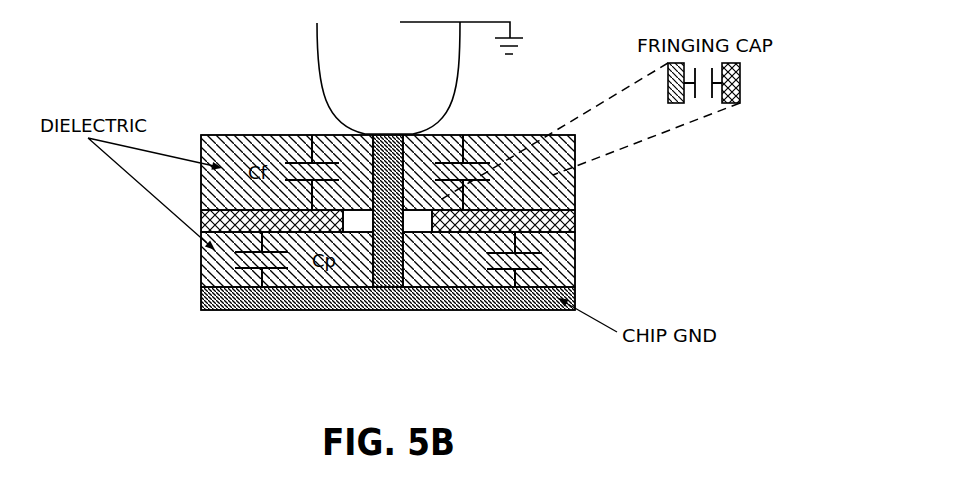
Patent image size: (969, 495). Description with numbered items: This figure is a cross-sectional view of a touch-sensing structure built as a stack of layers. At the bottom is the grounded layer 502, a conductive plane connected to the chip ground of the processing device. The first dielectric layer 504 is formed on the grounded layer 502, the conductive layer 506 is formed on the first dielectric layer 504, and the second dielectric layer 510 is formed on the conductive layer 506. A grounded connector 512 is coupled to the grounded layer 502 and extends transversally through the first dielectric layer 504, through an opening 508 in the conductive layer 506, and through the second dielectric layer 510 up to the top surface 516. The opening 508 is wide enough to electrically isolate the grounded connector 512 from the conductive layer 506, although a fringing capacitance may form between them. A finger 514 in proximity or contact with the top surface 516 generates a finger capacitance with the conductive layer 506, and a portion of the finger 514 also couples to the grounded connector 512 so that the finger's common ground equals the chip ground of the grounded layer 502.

The grounded layer 502 is at (201, 298).
The first dielectric layer 504 is at (201, 260).
The conductive layer 506 is at (558, 221).
The opening 508 is at (414, 236).
The second dielectric layer 510 is at (507, 133).
The grounded connector 512 is at (388, 254).
The finger 514 is at (310, 73).
The top surface 516 is at (230, 132).